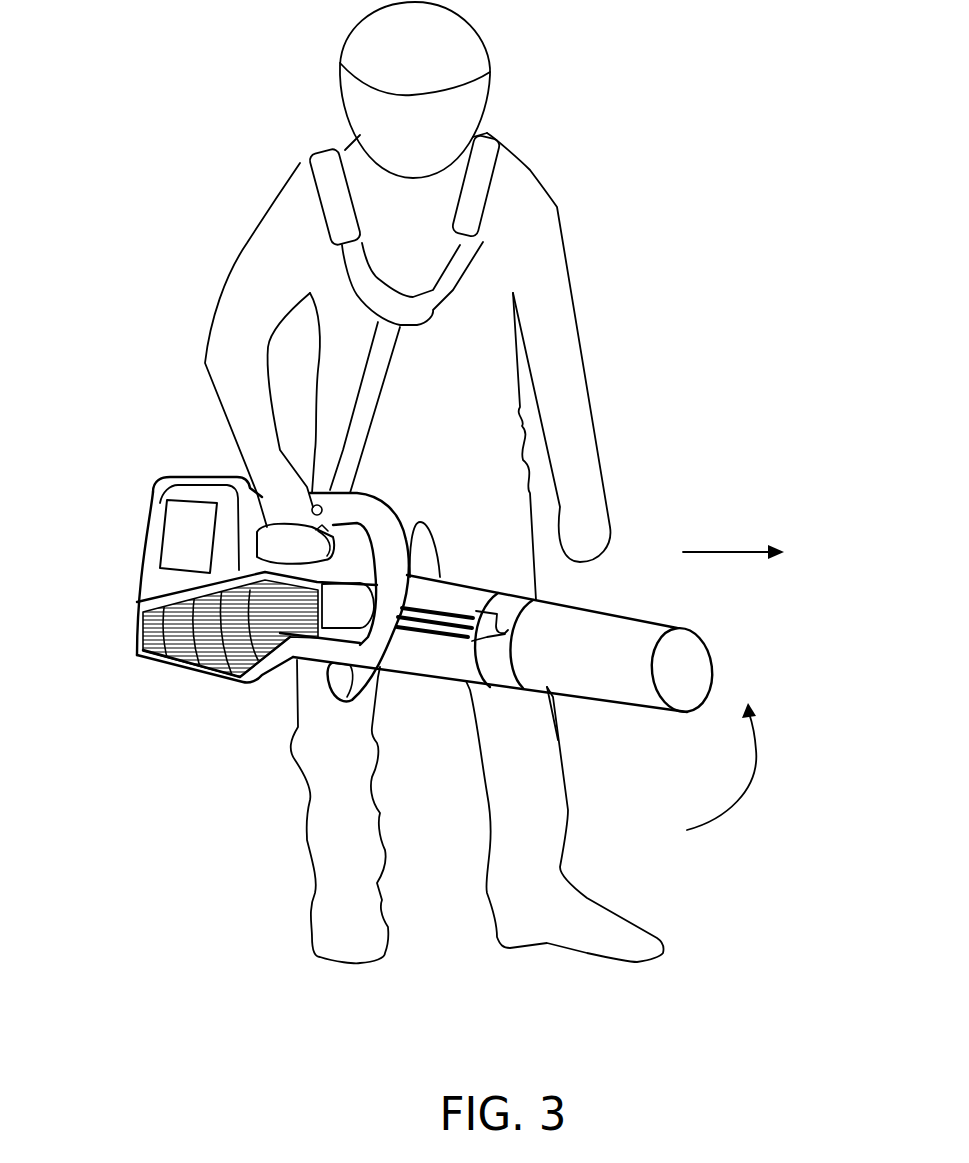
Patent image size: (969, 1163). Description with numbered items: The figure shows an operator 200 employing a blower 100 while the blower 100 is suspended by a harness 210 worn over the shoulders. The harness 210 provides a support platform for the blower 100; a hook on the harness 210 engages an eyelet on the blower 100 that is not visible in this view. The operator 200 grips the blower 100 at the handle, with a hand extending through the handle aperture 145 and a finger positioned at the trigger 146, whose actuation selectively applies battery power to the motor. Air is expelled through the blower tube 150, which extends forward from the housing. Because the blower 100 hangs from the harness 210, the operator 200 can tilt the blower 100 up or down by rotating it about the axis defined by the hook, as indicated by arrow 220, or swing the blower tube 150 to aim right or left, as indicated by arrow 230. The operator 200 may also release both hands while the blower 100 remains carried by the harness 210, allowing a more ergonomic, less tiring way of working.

The blower 100 is at (376, 542).
The handle aperture 145 is at (262, 550).
The trigger 146 is at (310, 523).
The blower tube 150 is at (609, 652).
The operator 200 is at (467, 52).
The harness 210 is at (493, 163).
The arrow 220 is at (732, 805).
The arrow 230 is at (730, 552).